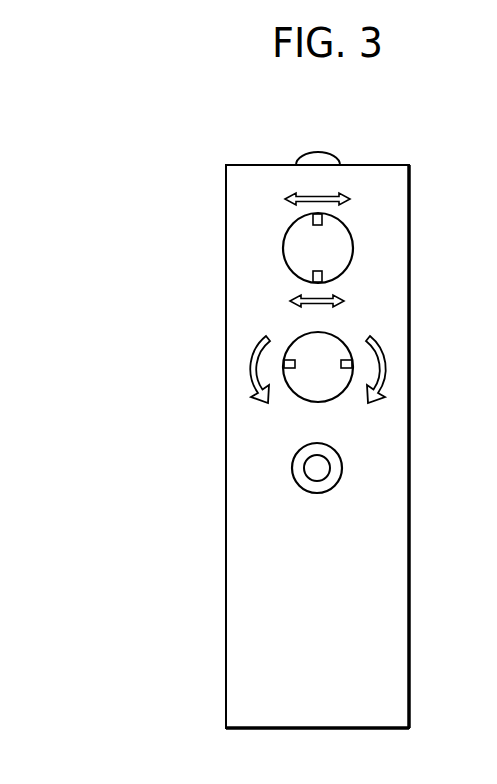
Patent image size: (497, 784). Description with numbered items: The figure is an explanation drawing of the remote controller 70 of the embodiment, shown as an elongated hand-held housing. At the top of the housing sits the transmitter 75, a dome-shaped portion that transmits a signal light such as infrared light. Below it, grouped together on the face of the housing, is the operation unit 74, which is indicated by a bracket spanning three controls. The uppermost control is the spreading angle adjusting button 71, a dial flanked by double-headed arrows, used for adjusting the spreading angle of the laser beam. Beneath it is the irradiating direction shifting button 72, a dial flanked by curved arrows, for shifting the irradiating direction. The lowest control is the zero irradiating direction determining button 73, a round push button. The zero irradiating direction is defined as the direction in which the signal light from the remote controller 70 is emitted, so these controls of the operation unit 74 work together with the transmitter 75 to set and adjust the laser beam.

The remote controller 70 is at (172, 153).
The spreading angle adjusting button 71 is at (283, 246).
The irradiating direction shifting button 72 is at (291, 344).
The 0 irradiating direction determining button 73 is at (294, 457).
The operation unit 74 is at (135, 227).
The transmitter 75 is at (334, 156).